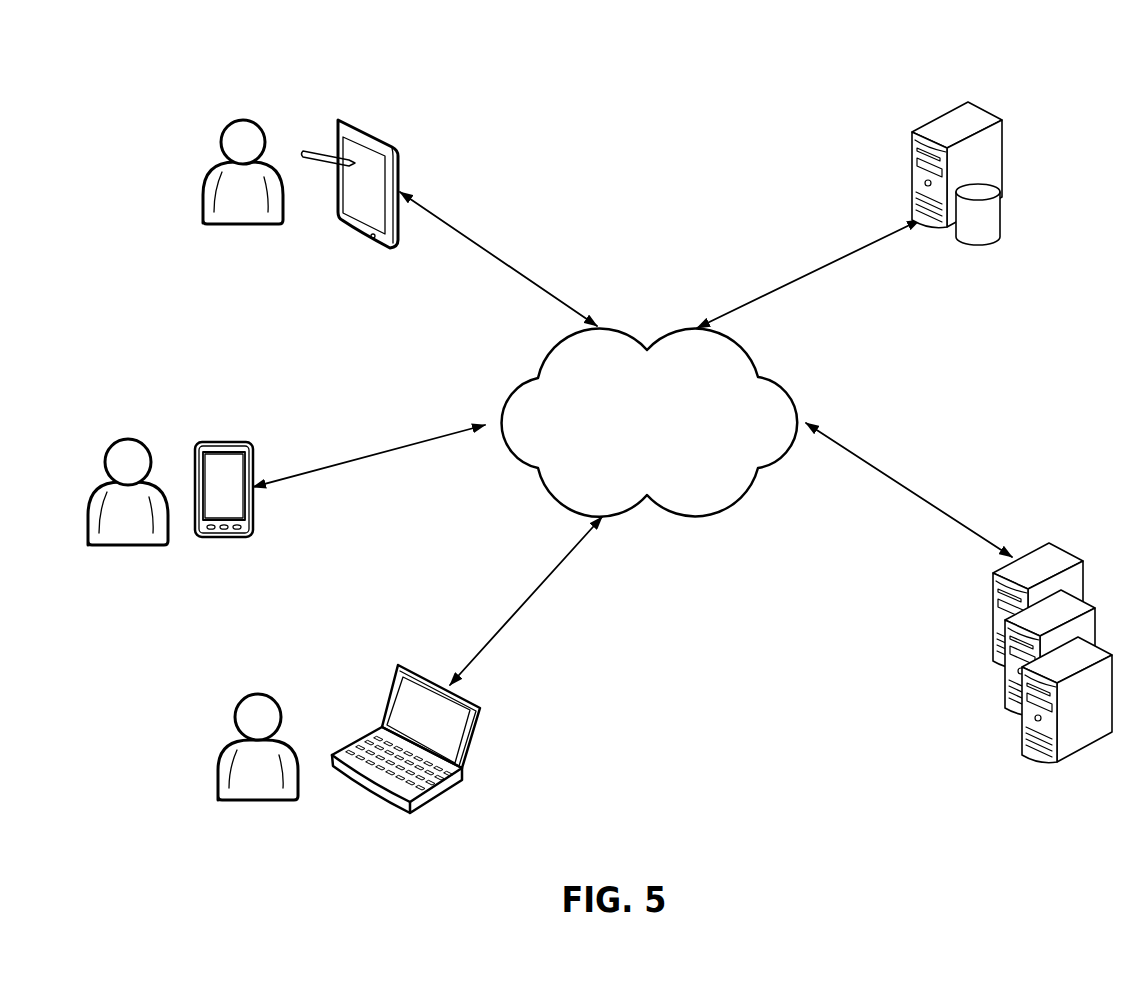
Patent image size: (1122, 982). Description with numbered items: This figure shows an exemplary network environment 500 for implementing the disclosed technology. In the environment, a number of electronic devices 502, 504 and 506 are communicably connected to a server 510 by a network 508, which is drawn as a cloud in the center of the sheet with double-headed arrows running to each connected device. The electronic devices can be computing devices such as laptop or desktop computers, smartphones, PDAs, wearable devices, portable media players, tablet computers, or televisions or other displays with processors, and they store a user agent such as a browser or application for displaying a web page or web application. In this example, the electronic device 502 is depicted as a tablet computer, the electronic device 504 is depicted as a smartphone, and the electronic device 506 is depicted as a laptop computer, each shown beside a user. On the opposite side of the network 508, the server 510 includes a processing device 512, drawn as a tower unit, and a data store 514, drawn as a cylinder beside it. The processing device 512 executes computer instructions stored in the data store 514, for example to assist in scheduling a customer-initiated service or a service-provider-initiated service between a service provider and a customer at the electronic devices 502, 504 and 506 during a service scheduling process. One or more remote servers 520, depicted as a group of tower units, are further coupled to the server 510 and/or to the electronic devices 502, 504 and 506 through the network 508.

The network environment 500 is at (86, 104).
The electronic device 502 is at (387, 143).
The electronic device 504 is at (227, 440).
The electronic device 506 is at (470, 755).
The network 508 is at (631, 445).
The server 510 is at (960, 186).
The processing device 512 is at (948, 112).
The data store 514 is at (990, 237).
The remote servers 520 is at (983, 685).